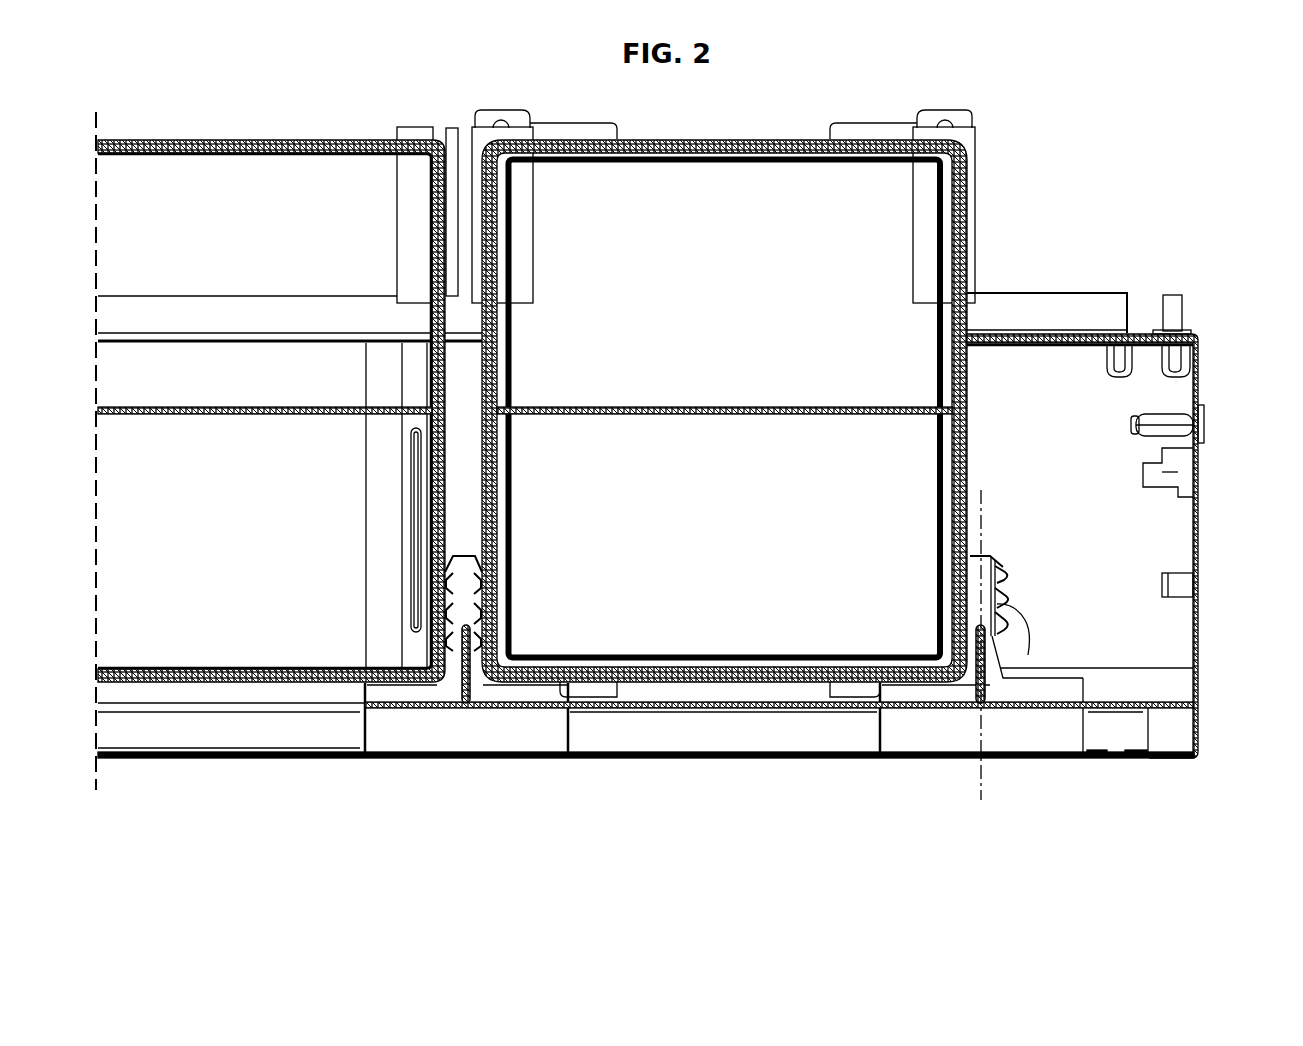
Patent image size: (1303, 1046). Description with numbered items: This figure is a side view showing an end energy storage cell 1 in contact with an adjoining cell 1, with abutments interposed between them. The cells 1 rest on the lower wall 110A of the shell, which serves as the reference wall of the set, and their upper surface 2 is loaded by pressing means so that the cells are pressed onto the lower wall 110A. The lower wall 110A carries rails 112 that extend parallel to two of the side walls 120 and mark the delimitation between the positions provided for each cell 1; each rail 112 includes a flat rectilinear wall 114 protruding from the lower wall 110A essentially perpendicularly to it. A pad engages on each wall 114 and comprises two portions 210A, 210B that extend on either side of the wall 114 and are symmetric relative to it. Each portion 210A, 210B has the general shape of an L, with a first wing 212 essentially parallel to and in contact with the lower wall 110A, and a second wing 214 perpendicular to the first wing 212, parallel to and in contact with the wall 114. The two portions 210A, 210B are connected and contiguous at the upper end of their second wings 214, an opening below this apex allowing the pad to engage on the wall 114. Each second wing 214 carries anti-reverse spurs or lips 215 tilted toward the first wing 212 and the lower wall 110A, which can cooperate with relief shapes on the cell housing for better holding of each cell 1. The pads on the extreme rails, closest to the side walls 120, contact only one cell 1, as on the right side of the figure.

The energy storage cell 1 is at (750, 206).
The upper surface 2 is at (661, 153).
The lower wall 110A is at (687, 760).
The rail 112 is at (528, 708).
The flat rectilinear wall 114 is at (460, 677).
The side wall 120 is at (1200, 533).
The first portion of pad 210A is at (928, 620).
The second portion of pad 210B is at (1027, 616).
The first wing 212 is at (405, 690).
The second wing 214 is at (452, 575).
The spur or lip 215 is at (452, 605).